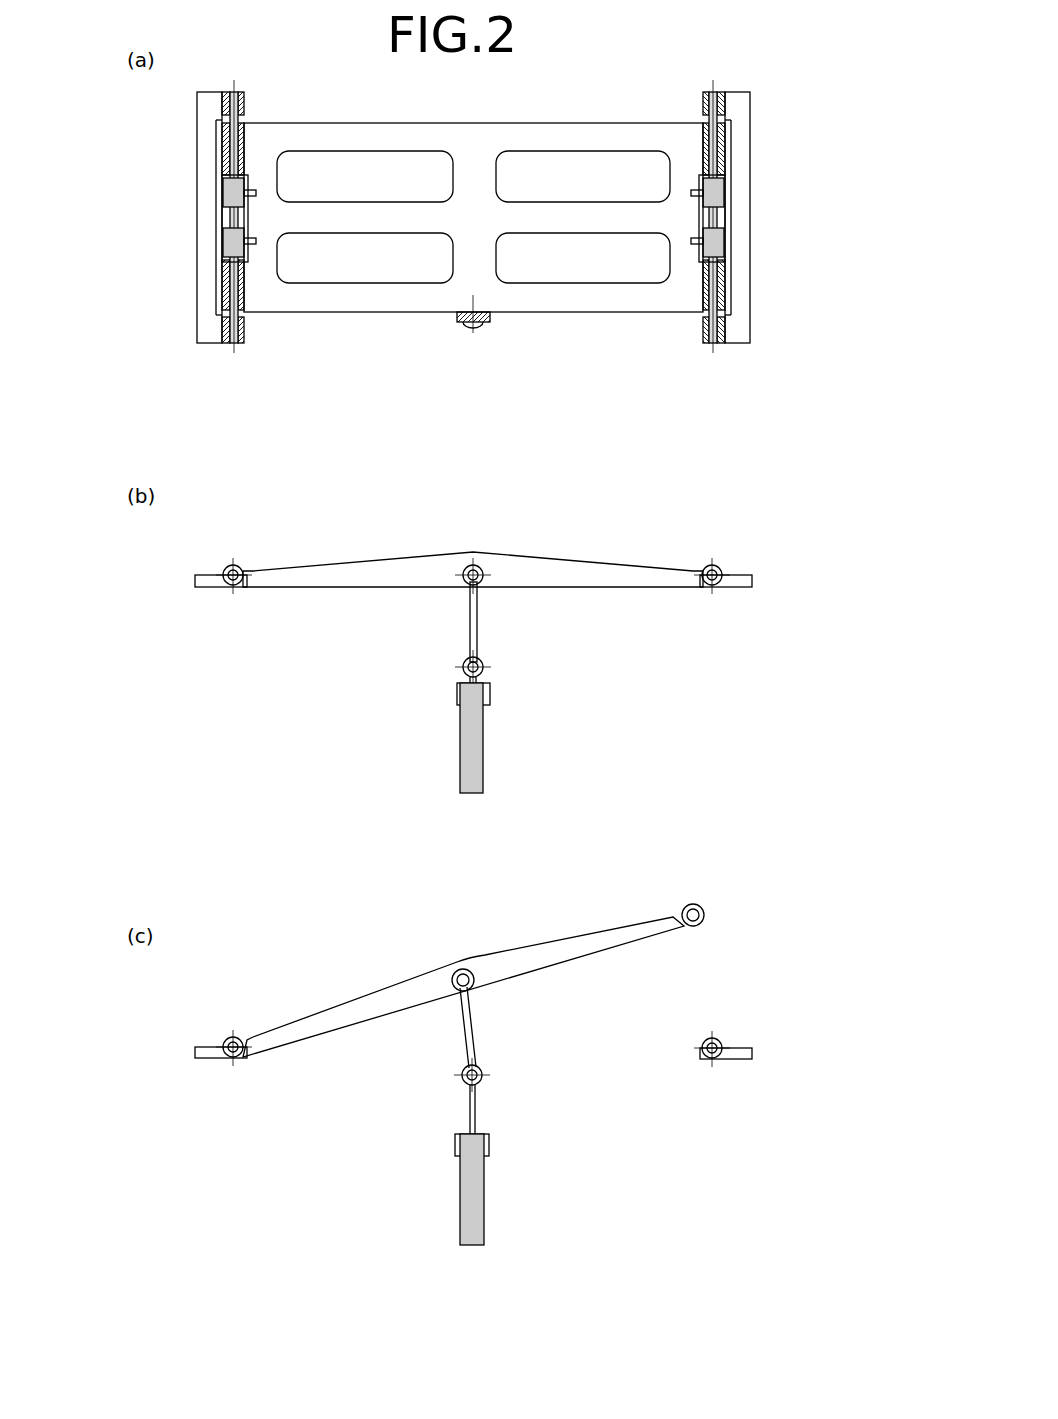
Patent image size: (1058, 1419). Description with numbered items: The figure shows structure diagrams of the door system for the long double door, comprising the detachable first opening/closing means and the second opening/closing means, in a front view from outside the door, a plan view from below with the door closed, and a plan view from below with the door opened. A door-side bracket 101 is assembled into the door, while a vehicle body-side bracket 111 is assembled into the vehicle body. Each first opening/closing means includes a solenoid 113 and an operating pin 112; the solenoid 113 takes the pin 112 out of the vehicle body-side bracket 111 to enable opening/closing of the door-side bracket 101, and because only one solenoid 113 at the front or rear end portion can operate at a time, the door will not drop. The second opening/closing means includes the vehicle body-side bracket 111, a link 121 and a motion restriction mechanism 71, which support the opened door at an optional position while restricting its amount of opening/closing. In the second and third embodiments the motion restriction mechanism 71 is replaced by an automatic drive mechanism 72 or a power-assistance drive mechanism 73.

The door-side bracket 101 is at (384, 298).
The vehicle body-side bracket 111 is at (208, 325).
The operating pin 112 is at (233, 283).
The solenoid 113 is at (232, 243).
The link 121 is at (472, 635).
The motion restriction mechanism 71 is at (587, 979).
The automatic drive mechanism 72 is at (587, 979).
The power-assistance drive mechanism 73 is at (473, 727).